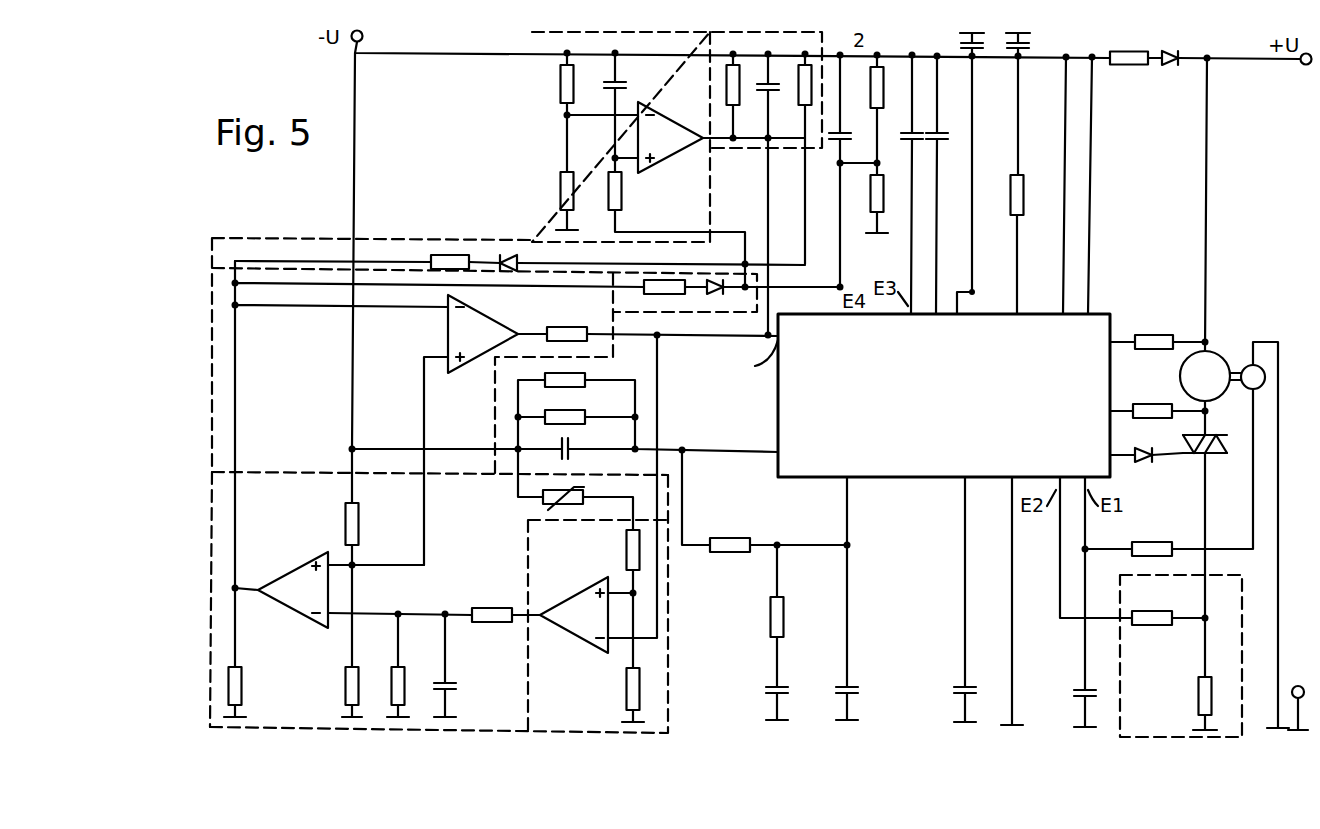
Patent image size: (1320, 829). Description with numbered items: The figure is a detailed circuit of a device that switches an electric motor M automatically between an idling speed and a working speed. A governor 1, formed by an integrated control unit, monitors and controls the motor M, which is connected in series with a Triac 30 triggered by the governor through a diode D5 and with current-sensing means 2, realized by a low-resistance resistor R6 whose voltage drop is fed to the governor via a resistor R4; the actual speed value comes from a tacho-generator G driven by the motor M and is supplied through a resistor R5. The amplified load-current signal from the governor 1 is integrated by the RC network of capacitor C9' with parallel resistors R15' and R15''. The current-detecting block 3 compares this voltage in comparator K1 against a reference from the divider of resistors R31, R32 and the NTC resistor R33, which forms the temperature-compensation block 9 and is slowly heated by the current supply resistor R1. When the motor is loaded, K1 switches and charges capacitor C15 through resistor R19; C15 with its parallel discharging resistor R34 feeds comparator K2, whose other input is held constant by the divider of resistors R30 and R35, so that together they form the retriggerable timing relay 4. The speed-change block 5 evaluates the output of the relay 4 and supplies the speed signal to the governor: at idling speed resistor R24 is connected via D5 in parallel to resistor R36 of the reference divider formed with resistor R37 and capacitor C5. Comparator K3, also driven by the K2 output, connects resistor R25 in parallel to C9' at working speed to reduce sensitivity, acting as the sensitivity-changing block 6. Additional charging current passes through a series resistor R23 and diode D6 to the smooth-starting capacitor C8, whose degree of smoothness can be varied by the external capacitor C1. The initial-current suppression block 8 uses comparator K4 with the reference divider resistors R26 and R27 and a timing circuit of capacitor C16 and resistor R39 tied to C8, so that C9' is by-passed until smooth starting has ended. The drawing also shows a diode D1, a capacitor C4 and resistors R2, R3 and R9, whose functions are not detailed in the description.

The governor 1 is at (895, 478).
The current-sensing means 2 is at (1247, 605).
The current-detecting block 3 is at (672, 672).
The retriggerable timing relay 4 is at (204, 575).
The circuit block for speed changing 5 is at (225, 232).
The circuit block for changing response sensitivity 6 is at (210, 350).
The circuit block for suppressing initial current 8 is at (527, 45).
The circuit block for temperature compensation 9 is at (565, 451).
The Triac 30 is at (1210, 457).
The current supply resistor R1 is at (1130, 65).
The diode D1 is at (1172, 66).
The resistor R26 is at (574, 95).
The resistor R27 is at (560, 182).
The capacitor C16 is at (618, 92).
The resistor R39 is at (622, 186).
The comparator K4 is at (668, 128).
The resistor R15'' is at (737, 121).
The capacitor C9' is at (779, 109).
The resistor R15' is at (792, 121).
The smooth-starting capacitor C8 is at (849, 126).
The resistor R36 is at (886, 92).
The resistor R37 is at (870, 215).
The capacitor C5 is at (903, 126).
The capacitor C4 is at (945, 125).
The capacitor C1 is at (1032, 44).
The resistor R9 is at (1015, 205).
The resistor R24 is at (452, 254).
The diode D5 is at (507, 252).
The diode D6 is at (729, 297).
The comparator K3 is at (447, 330).
The resistor R25 is at (563, 327).
The NTC resistor R33 is at (586, 490).
The resistor R31 is at (627, 560).
The resistor R32 is at (627, 684).
The comparator K1 is at (572, 605).
The resistor R19 is at (490, 607).
The comparator K2 is at (282, 583).
The resistor R30 is at (346, 520).
The resistor R23 is at (240, 688).
The resistor R35 is at (356, 690).
The discharging resistor R34 is at (402, 688).
The capacitor C15 is at (447, 682).
The resistor R2 is at (1158, 334).
The resistor R3 is at (1158, 403).
The resistor R5 is at (1135, 545).
The resistor R4 is at (1162, 611).
The resistor R6 is at (1192, 698).
The electric motor M is at (1205, 376).
The tacho-generator G is at (1253, 377).